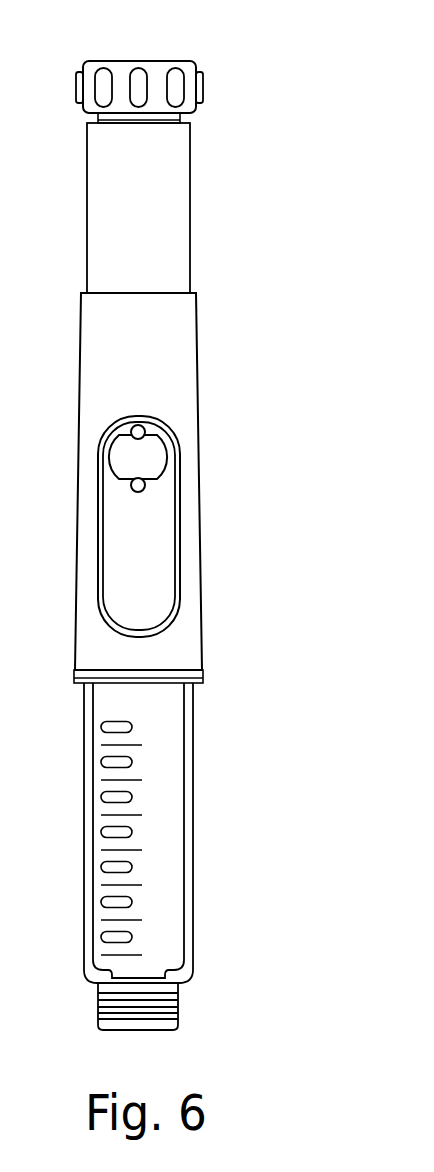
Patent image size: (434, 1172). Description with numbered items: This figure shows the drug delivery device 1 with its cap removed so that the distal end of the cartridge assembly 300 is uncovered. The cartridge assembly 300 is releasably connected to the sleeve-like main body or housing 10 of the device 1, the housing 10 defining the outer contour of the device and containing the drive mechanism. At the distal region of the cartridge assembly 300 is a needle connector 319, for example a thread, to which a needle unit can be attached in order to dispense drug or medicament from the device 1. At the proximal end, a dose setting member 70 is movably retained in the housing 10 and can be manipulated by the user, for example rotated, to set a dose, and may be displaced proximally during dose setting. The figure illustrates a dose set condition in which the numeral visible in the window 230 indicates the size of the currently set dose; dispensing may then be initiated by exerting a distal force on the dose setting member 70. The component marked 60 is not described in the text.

The drug delivery device 1 is at (275, 405).
The housing 10 is at (197, 342).
The dose setting member 60 is at (190, 220).
The dose setting member 70 is at (207, 83).
The window 230 is at (153, 538).
The cartridge assembly 300 is at (193, 803).
The needle connector 319 is at (178, 1002).